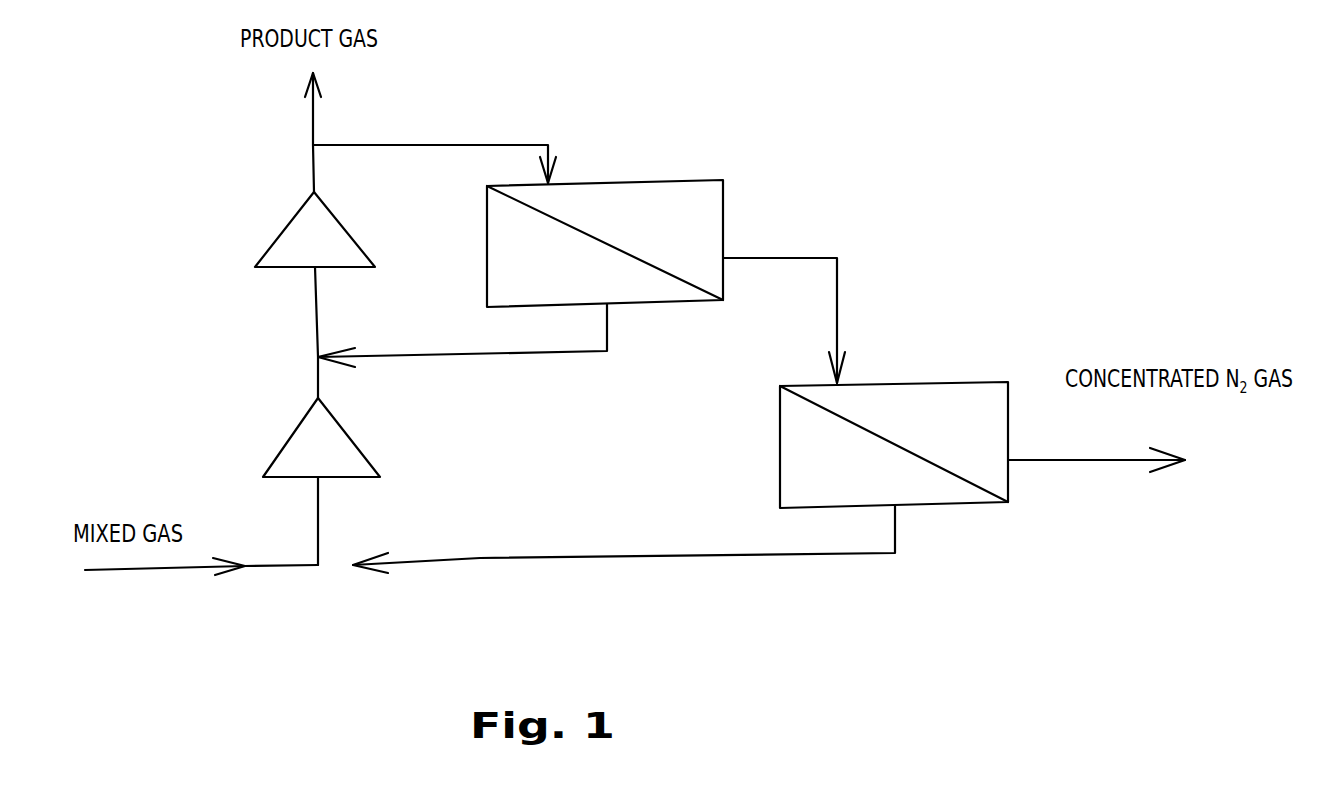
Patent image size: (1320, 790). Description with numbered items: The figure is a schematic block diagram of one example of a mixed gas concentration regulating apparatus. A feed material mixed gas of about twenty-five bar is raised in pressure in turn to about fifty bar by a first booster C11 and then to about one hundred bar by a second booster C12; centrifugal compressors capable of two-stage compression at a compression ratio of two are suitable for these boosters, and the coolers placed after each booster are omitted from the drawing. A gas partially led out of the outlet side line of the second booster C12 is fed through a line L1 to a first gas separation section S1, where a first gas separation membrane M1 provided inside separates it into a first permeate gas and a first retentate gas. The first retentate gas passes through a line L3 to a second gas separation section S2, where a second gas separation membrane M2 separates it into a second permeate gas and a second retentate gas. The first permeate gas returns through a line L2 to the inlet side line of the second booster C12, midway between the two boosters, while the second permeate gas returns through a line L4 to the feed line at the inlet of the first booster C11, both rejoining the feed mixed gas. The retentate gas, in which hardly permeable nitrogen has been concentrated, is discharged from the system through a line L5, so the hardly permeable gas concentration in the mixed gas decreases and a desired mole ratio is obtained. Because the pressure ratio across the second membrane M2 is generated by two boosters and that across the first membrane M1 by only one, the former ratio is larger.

The first booster C11 is at (286, 445).
The second booster C12 is at (290, 223).
The first gas separation section S1 is at (642, 180).
The second gas separation section S2 is at (915, 382).
The first gas separation membrane M1 is at (685, 282).
The second gas separation membrane M2 is at (962, 481).
The line L1 is at (434, 142).
The line L2 is at (462, 335).
The line L3 is at (784, 299).
The line L4 is at (624, 539).
The line L5 is at (1096, 442).